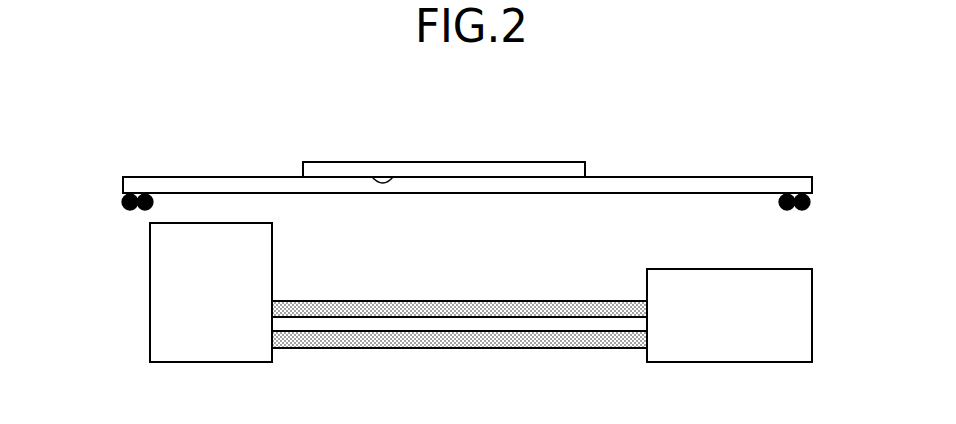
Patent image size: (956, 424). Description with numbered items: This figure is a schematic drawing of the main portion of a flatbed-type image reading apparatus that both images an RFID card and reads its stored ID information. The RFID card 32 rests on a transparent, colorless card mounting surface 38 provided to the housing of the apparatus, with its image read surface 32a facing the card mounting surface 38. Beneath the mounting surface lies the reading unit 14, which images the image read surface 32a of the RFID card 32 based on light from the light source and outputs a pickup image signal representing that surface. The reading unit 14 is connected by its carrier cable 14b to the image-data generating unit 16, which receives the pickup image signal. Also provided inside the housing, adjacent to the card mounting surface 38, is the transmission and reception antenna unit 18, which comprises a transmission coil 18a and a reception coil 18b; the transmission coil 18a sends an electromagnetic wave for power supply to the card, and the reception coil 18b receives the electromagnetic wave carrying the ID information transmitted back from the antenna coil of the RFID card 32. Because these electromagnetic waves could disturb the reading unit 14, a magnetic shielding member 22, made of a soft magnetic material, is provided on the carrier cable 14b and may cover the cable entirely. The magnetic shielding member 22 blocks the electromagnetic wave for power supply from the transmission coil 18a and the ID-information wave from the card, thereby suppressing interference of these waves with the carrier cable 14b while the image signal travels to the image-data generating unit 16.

The reading unit 14 is at (143, 296).
The carrier cable 14b is at (448, 323).
The image-data generating unit 16 is at (727, 269).
The transmission and reception antenna unit 18 is at (469, 221).
The transmission coil 18a is at (138, 211).
The reception coil 18b is at (121, 203).
The magnetic shielding member 22 is at (553, 301).
The RFID card 32 is at (545, 157).
The image read surface 32a is at (386, 179).
The card mounting surface 38 is at (727, 177).